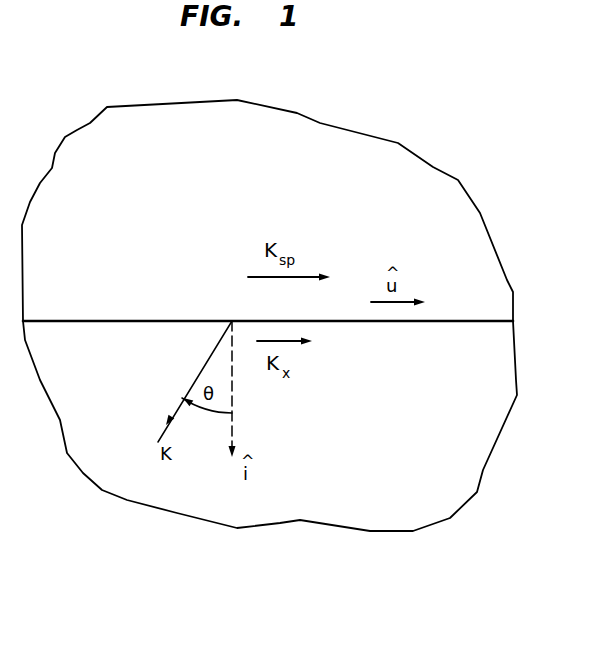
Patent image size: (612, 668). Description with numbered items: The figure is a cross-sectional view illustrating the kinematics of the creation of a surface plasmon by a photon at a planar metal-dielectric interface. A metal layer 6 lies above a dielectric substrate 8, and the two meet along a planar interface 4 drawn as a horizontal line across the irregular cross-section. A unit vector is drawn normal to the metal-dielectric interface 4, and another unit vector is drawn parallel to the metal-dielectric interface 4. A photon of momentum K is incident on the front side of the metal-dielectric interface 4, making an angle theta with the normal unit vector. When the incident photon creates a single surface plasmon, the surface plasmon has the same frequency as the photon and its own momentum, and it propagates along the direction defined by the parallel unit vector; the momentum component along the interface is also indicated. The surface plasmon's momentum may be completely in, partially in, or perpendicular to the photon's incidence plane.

The planar metal-dielectric interface 4 is at (98, 321).
The metal layer 6 is at (368, 195).
The dielectric substrate 8 is at (407, 456).